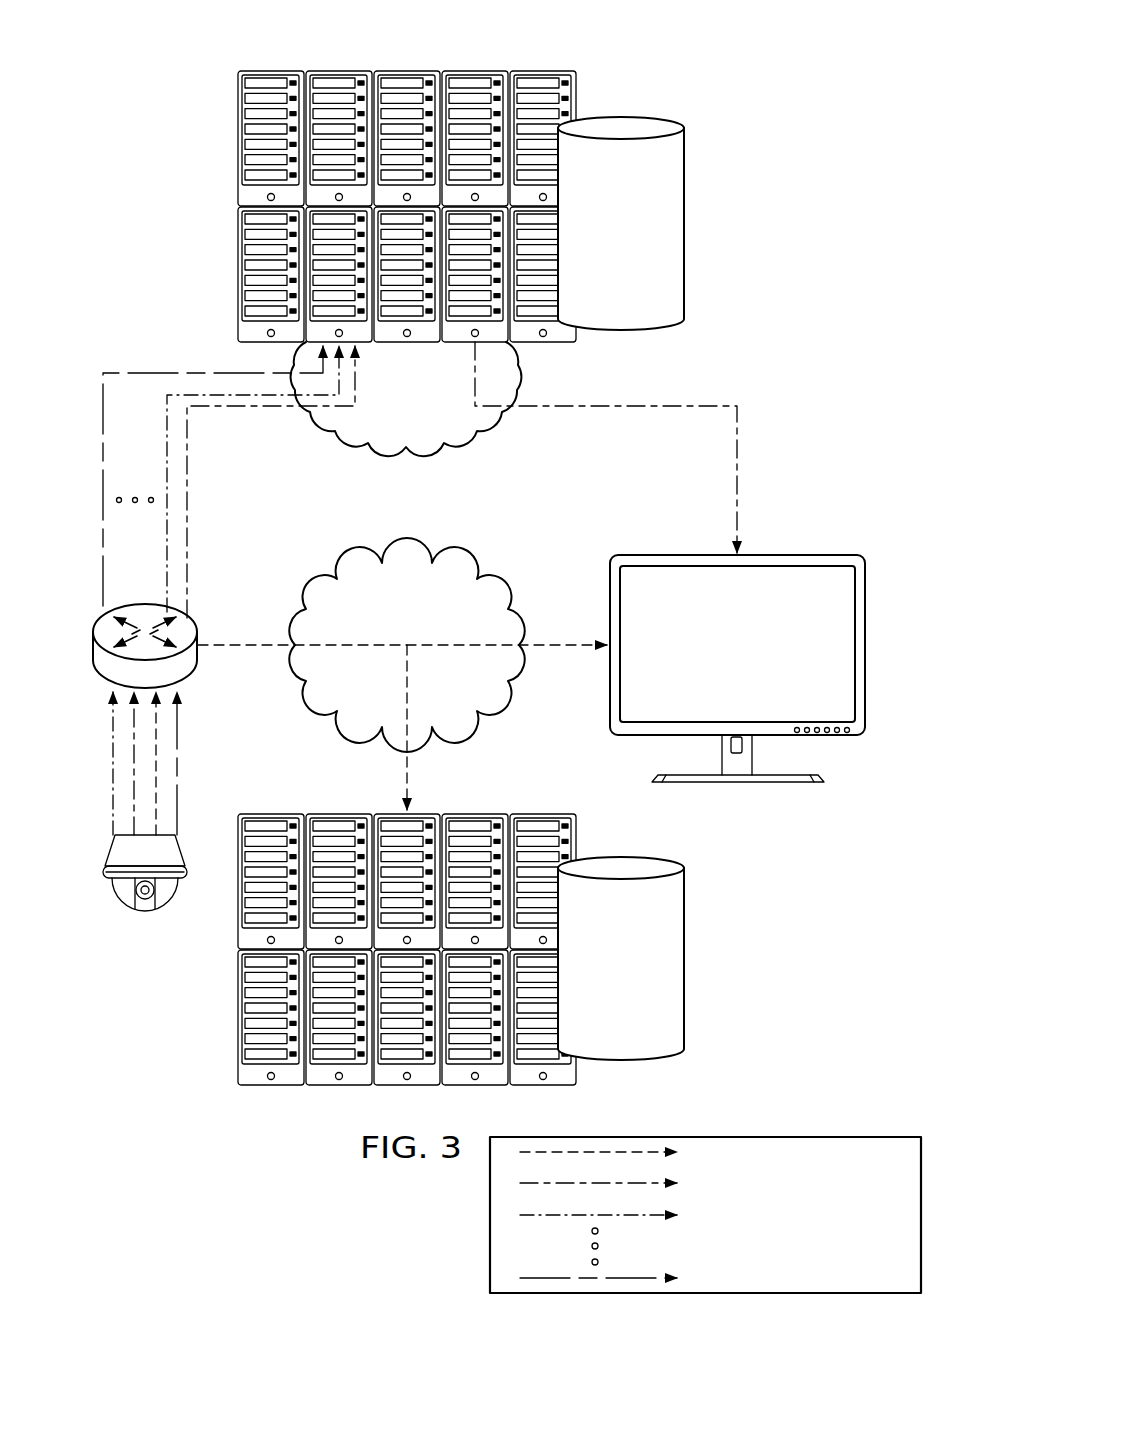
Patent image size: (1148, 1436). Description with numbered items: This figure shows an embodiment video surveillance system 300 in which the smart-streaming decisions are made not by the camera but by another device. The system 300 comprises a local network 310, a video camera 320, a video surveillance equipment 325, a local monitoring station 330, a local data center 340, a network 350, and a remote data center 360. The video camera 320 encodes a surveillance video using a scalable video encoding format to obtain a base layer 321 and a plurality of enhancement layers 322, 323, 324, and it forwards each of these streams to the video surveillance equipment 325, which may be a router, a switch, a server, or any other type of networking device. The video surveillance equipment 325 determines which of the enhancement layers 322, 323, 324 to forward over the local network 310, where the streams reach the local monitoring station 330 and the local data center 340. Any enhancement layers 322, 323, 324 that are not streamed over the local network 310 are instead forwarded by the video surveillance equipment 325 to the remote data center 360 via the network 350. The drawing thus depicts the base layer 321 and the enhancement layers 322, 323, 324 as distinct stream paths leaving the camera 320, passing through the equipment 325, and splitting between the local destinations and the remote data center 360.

The video surveillance system 300 is at (724, 58).
The local network 310 is at (388, 561).
The video camera 320 is at (127, 906).
The base layer 321 is at (545, 648).
The enhancement layer 322 is at (188, 465).
The enhancement layer 323 is at (168, 505).
The enhancement layer 324 is at (153, 373).
The video surveillance equipment 325 is at (190, 684).
The local monitoring station 330 is at (772, 555).
The local data center 340 is at (234, 1048).
The network 350 is at (405, 450).
The remote data center 360 is at (235, 94).